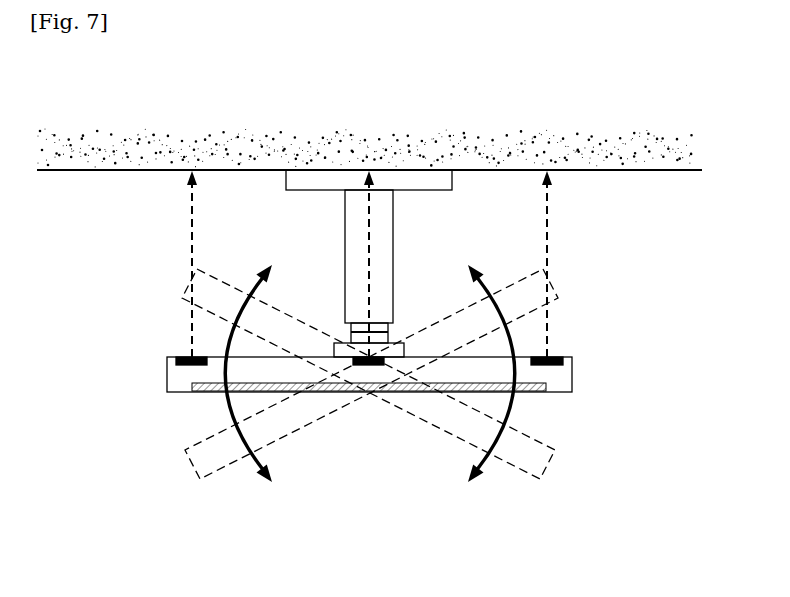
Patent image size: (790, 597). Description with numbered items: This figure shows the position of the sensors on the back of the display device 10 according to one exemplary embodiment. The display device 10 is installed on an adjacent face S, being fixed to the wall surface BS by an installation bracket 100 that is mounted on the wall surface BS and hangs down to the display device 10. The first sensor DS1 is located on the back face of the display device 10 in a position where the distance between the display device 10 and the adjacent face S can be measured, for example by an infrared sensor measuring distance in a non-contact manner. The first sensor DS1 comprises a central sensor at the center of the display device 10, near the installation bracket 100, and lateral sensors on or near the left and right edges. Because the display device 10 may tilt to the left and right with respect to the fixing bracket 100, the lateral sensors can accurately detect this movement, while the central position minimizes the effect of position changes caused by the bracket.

The installation bracket 100 is at (427, 176).
The adjacent face S is at (653, 75).
The wall surface BS is at (630, 135).
The display device 10 is at (128, 383).
The first sensor DS1 is at (565, 553).